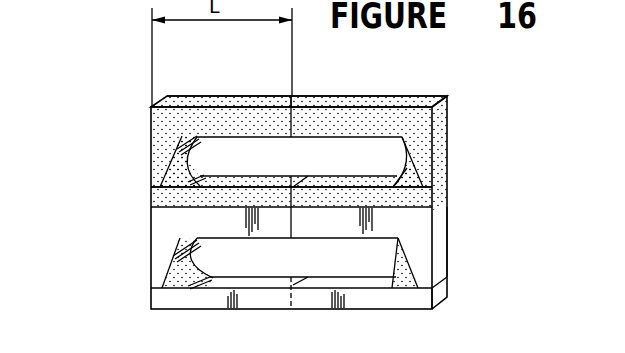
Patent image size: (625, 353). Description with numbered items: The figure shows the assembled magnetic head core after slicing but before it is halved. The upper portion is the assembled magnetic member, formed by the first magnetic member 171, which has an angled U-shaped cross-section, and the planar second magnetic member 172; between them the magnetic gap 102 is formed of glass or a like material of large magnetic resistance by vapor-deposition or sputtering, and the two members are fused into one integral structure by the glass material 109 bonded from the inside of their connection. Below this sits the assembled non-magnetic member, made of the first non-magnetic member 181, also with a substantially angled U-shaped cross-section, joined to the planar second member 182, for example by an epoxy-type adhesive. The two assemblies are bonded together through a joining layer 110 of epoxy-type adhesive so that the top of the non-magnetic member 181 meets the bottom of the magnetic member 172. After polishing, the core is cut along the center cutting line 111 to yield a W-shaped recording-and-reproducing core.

The magnetic gap 102 is at (151, 188).
The glass material 109 is at (158, 164).
The joining layer 110 is at (436, 196).
The center cutting line 111 is at (291, 97).
The first magnetic member 171 is at (447, 97).
The second magnetic member 172 is at (151, 198).
The first non-magnetic member 181 is at (447, 230).
The second member 182 is at (447, 287).